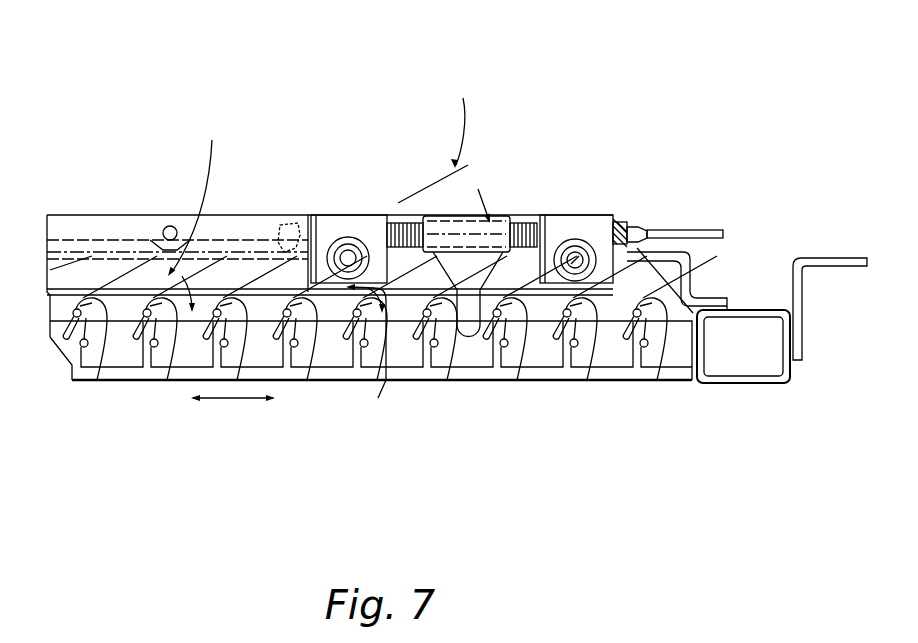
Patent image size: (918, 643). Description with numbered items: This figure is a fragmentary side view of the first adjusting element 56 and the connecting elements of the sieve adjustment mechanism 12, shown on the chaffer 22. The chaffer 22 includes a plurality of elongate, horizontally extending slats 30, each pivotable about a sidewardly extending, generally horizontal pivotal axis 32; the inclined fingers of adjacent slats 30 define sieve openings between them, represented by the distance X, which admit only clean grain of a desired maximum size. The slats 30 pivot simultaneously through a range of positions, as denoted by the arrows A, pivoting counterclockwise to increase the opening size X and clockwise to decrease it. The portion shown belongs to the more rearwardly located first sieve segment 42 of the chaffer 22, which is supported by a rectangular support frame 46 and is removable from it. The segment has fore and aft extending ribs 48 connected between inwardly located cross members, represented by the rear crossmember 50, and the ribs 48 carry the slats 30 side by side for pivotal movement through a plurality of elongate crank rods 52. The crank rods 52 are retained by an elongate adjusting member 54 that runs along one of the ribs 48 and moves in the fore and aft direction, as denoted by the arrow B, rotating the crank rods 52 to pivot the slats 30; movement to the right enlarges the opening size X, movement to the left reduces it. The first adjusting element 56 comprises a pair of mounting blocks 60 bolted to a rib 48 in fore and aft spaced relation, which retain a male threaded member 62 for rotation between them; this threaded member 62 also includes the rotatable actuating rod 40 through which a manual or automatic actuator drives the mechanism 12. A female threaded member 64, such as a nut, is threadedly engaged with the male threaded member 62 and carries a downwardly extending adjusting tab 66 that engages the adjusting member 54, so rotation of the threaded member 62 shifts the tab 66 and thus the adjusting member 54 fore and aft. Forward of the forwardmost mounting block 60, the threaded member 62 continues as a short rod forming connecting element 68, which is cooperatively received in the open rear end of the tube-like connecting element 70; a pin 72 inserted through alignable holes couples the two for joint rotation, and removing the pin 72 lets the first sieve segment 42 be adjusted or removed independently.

The sieve adjustment mechanism 12 is at (642, 193).
The chaffer 22 is at (762, 118).
The slats 30 is at (47, 214).
The pivotal axis 32 is at (353, 390).
The actuating rod 40 is at (723, 233).
The first sieve segment 42 is at (70, 383).
The support frame 46 is at (630, 227).
The ribs 48 is at (663, 293).
The rear crossmember 50 is at (770, 383).
The crank rods 52 is at (157, 380).
The adjusting member 54 is at (523, 367).
The first adjusting element 56 is at (615, 215).
The mounting blocks 60 is at (320, 215).
The male threaded member 62 is at (520, 215).
The female threaded member 64 is at (498, 215).
The adjusting tab 66 is at (470, 333).
The connecting element 68 is at (283, 223).
The connecting element 70 is at (173, 225).
The pin 72 is at (320, 245).
The arrows A is at (277, 271).
The arrow B is at (233, 398).
The opening size X is at (467, 152).